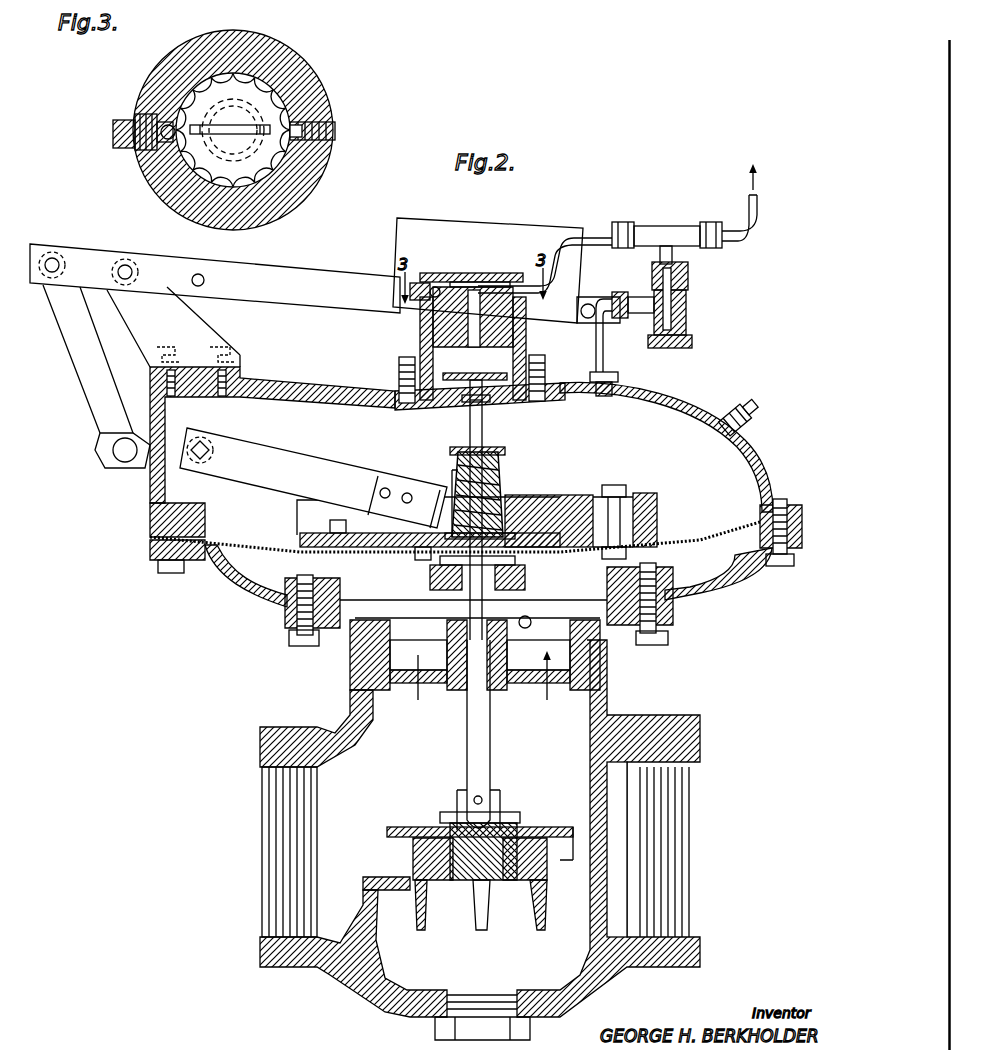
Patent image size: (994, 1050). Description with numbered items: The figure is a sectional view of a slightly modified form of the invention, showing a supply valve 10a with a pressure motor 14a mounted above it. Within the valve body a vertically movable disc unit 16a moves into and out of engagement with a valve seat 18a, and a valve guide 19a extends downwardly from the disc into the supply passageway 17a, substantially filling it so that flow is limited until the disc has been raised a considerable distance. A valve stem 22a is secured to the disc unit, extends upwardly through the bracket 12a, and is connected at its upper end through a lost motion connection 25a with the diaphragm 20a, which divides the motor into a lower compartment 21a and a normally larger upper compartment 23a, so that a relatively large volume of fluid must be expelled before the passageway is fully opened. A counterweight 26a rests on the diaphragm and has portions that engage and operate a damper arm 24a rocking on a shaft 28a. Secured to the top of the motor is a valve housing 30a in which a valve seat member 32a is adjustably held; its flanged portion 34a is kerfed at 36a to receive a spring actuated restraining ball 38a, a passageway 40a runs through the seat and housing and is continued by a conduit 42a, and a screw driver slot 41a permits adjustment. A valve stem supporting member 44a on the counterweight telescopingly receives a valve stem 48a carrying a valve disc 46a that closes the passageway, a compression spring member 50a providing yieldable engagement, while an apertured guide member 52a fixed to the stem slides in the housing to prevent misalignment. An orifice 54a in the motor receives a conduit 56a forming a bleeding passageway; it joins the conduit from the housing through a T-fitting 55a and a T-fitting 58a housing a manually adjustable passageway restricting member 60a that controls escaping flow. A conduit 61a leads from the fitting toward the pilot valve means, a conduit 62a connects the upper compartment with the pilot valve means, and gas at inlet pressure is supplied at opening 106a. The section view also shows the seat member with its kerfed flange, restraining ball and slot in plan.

In FIG. 2, the supply valve 10a is at (598, 725).
In FIG. 2, the bracket 12a is at (608, 640).
In FIG. 2, the pressure motor 14a is at (728, 580).
In FIG. 2, the disc unit 16a is at (535, 827).
In FIG. 2, the supply passageway 17a is at (400, 890).
In FIG. 2, the valve seat 18a is at (398, 848).
In FIG. 2, the valve guide 19a is at (548, 910).
In FIG. 2, the diaphragm 20a is at (545, 558).
In FIG. 2, the lower compartment 21a is at (428, 543).
In FIG. 2, the valve stem 22a is at (486, 740).
In FIG. 2, the upper compartment 23a is at (666, 447).
In FIG. 2, the damper arm 24a is at (330, 470).
In FIG. 2, the lost motion connection 25a is at (528, 582).
In FIG. 2, the counterweight 26a is at (575, 500).
In FIG. 2, the shaft 28a is at (210, 445).
In FIG. 3, the valve housing 30a is at (305, 178).
In FIG. 2, the valve housing 30a is at (432, 328).
In FIG. 2, the valve seat member 32a is at (446, 355).
In FIG. 3, the flanged portion 34a is at (248, 170).
In FIG. 2, the flanged portion 34a is at (470, 276).
In FIG. 3, the kerf 36a is at (278, 160).
In FIG. 3, the spring actuated restraining ball 38a is at (165, 120).
In FIG. 2, the spring actuated restraining ball 38a is at (440, 286).
In FIG. 3, the passageway 40a is at (318, 129).
In FIG. 2, the passageway 40a is at (470, 348).
In FIG. 3, the screw driver slot 41a is at (247, 124).
In FIG. 2, the screw driver slot 41a is at (472, 282).
In FIG. 2, the conduit 42a is at (587, 240).
In FIG. 2, the valve stem supporting member 44a is at (502, 478).
In FIG. 2, the valve disc 46a is at (500, 410).
In FIG. 2, the valve stem 48a is at (490, 408).
In FIG. 2, the compression spring member 50a is at (455, 475).
In FIG. 2, the apertured guide member 52a is at (460, 447).
In FIG. 2, the orifice 54a is at (604, 396).
In FIG. 2, the T-fitting 55a is at (672, 236).
In FIG. 2, the conduit 56a is at (597, 356).
In FIG. 2, the T-fitting 58a is at (686, 292).
In FIG. 2, the passageway restricting member 60a is at (690, 314).
In FIG. 2, the conduit 61a is at (735, 238).
In FIG. 2, the conduit 62a is at (748, 415).
In FIG. 2, the opening 106a is at (531, 621).